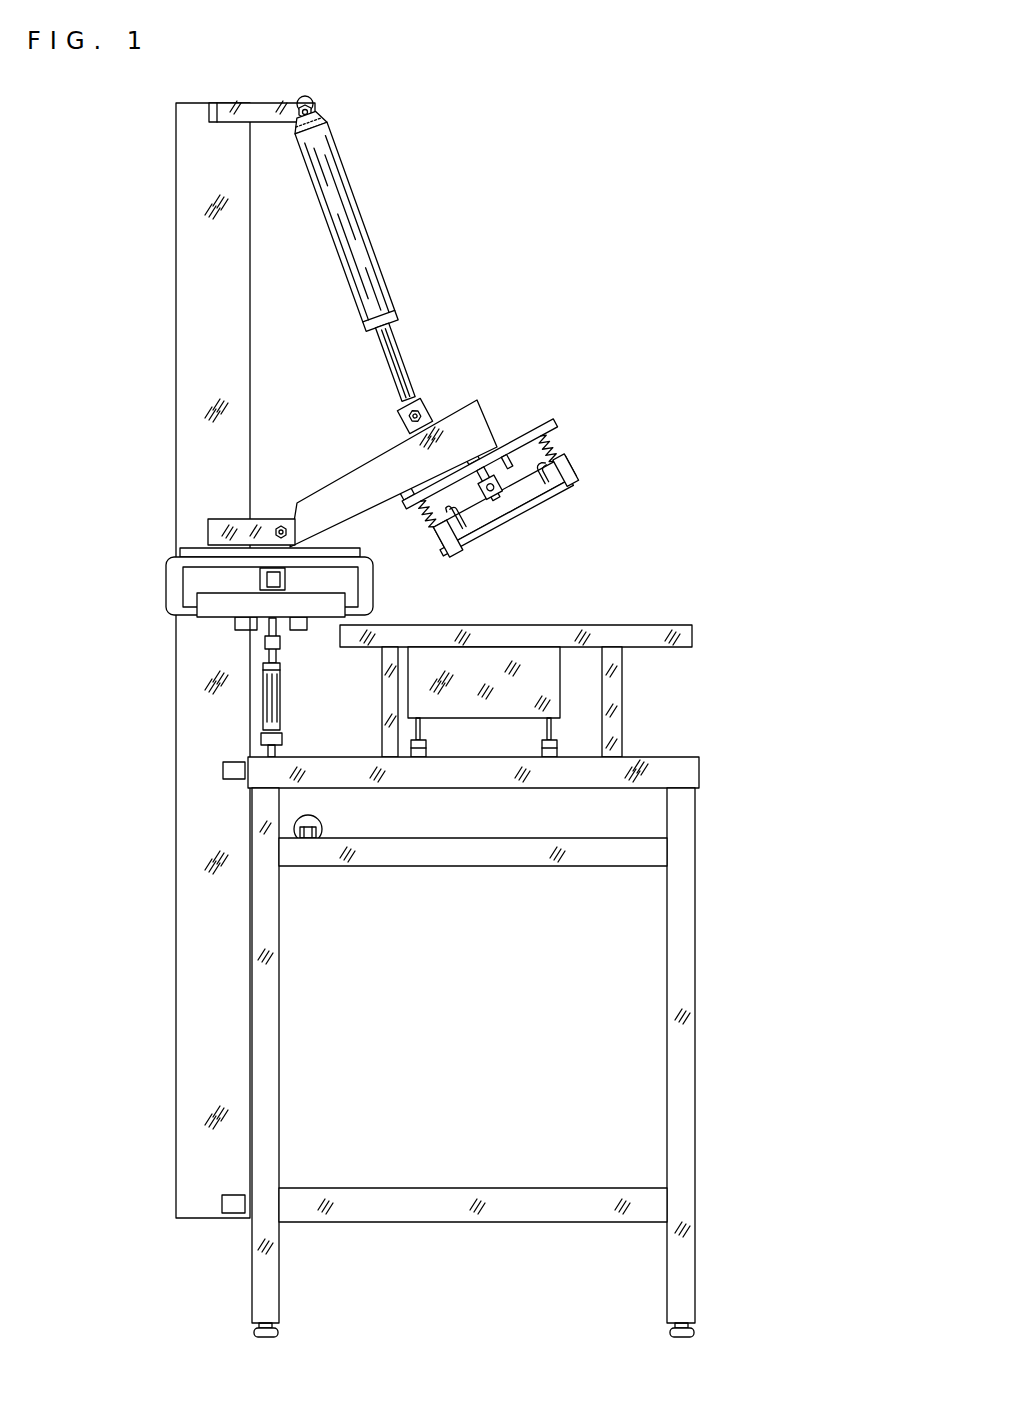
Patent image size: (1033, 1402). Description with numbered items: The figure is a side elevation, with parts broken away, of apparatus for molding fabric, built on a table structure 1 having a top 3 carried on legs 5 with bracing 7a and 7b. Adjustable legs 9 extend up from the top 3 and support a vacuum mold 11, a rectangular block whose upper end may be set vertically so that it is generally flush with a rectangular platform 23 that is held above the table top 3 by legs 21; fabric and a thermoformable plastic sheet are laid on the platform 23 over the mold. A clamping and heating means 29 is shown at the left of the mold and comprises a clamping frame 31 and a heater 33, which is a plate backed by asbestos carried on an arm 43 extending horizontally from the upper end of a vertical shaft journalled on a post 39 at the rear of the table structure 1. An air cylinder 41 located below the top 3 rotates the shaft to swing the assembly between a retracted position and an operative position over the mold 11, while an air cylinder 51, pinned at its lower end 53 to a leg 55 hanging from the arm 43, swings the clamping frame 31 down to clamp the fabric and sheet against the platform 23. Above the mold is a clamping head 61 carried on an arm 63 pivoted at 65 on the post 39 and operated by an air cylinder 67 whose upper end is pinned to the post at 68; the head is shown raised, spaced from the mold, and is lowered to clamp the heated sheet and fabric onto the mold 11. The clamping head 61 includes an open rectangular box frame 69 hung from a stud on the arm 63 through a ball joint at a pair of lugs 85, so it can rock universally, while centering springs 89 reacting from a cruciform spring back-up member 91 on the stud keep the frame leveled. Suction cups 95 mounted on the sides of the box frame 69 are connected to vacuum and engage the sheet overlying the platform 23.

The table structure 1 is at (495, 1046).
The top 3 is at (700, 776).
The legs 5 is at (250, 1283).
The bracing 7a is at (500, 868).
The bracing 7b is at (460, 1222).
The adjustable legs 9 is at (545, 728).
The vacuum mold 11 is at (508, 682).
The legs 21 is at (382, 712).
The rectangular platform 23 is at (596, 626).
The clamping and heating means 29 is at (241, 608).
The clamping frame 31 is at (373, 598).
The heater 33 is at (213, 606).
The post 39 is at (176, 336).
The air cylinder 41 is at (318, 828).
The arm 43 is at (258, 580).
The air cylinder 51 is at (268, 700).
The pin 53 is at (283, 740).
The leg 55 is at (280, 652).
The clamping head 61 is at (519, 476).
The arm 63 is at (455, 415).
The pivot 65 is at (278, 527).
The air cylinder 67 is at (370, 238).
The pin 68 is at (312, 108).
The box frame 69 is at (520, 508).
The lugs 85 is at (490, 498).
The centering springs 89 is at (562, 446).
The spring back-up member 91 is at (530, 432).
The suction cups 95 is at (568, 482).